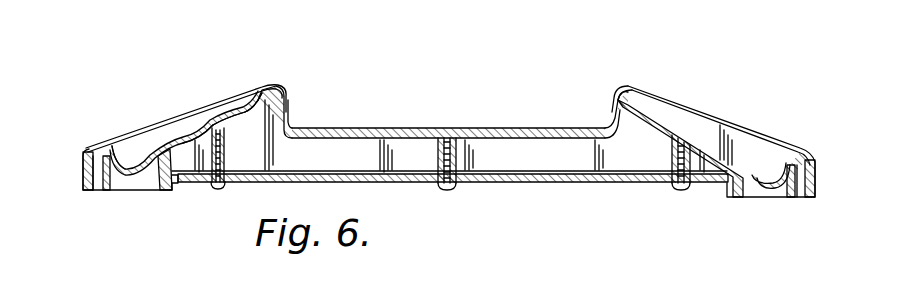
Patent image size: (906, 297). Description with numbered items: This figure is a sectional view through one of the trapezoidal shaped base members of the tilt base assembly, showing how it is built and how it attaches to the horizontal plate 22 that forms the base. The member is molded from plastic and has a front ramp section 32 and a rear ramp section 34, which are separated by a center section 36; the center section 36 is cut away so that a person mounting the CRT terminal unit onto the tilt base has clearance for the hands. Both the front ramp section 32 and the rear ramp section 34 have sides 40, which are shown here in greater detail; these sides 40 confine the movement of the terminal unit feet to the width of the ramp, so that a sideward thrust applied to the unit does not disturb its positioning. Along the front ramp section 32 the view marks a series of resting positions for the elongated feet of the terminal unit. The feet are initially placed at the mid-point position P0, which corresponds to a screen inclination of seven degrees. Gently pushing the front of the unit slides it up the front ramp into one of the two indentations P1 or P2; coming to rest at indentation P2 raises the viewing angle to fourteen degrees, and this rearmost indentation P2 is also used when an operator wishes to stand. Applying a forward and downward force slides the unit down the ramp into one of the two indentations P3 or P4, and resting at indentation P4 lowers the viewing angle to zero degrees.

The horizontal plate 22 is at (523, 183).
The front ramp section 32 is at (173, 116).
The rear ramp section 34 is at (677, 103).
The center section 36 is at (395, 128).
The sides 40 is at (210, 117).
The mid-point position P0 is at (200, 135).
The indentation P1 is at (227, 120).
The indentation P2 is at (247, 110).
The indentation P3 is at (183, 148).
The indentation P4 is at (132, 163).